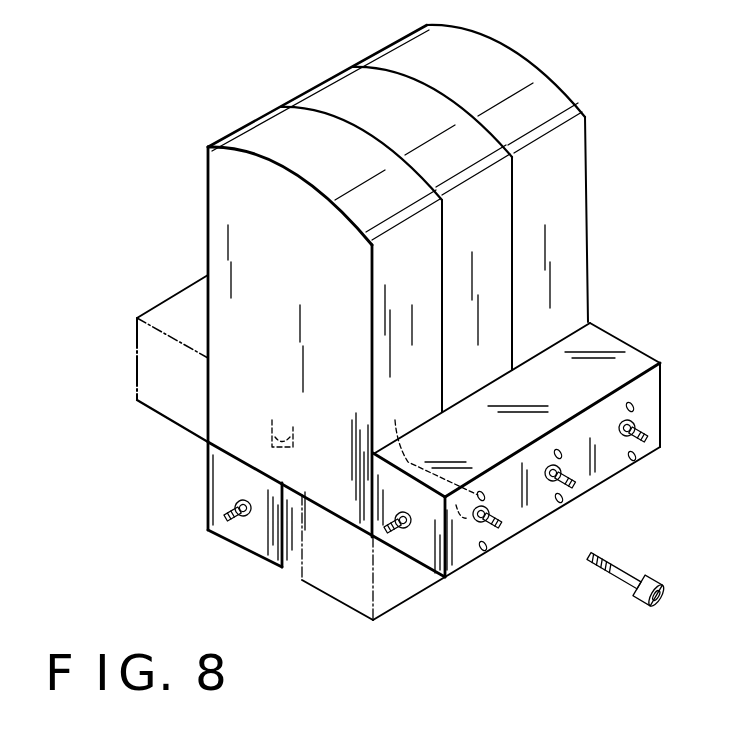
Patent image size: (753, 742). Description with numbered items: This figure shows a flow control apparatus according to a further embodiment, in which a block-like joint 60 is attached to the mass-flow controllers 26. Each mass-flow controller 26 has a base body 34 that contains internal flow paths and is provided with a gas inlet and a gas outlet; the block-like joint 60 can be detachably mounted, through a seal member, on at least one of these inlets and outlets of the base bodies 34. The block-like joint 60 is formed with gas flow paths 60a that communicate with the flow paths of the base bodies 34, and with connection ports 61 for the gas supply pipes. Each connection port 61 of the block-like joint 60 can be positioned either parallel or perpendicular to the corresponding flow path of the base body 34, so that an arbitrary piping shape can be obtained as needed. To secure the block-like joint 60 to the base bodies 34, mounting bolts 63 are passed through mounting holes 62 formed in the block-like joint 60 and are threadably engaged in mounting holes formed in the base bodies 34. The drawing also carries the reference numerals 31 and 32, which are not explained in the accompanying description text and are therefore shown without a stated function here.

The mass-flow controller 26 is at (380, 50).
The base body 34 is at (423, 318).
The block-like joint 60 is at (172, 297).
The gas flow path 60a is at (463, 505).
The connection port 61 is at (232, 511).
The mounting hole 62 is at (481, 492).
The mounting bolt 63 is at (635, 402).
The hidden passage 32 is at (430, 442).
The hidden element 31 is at (272, 447).